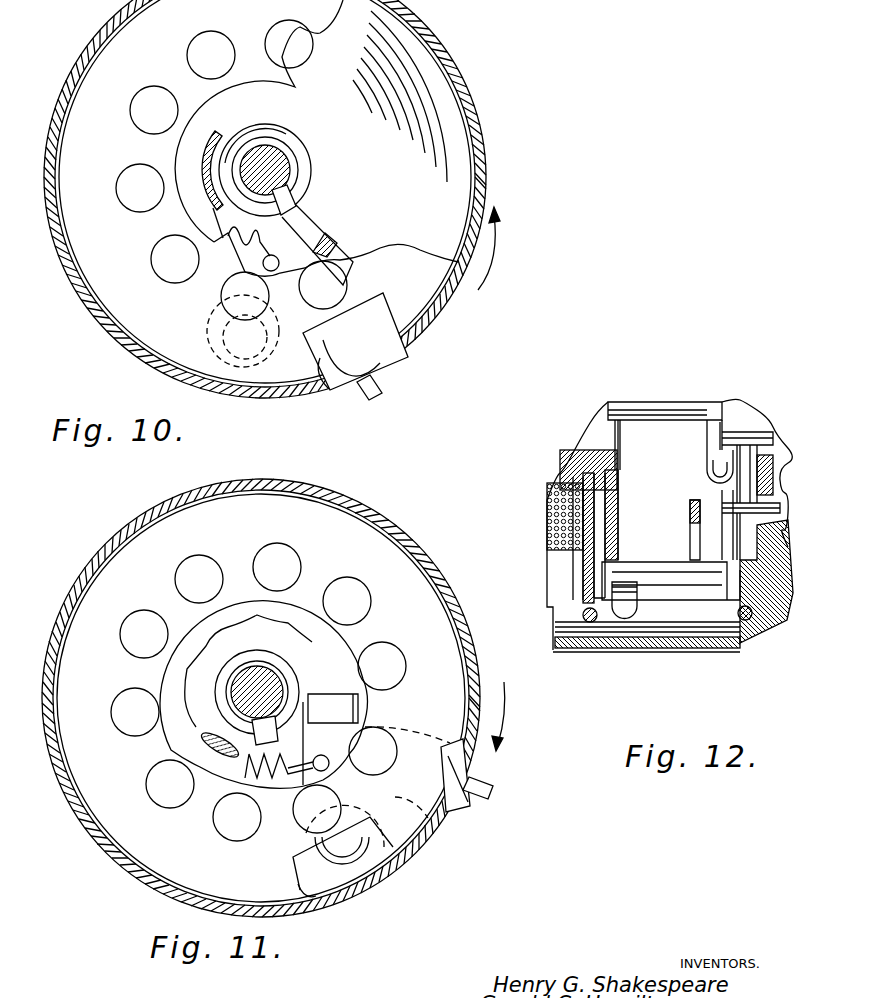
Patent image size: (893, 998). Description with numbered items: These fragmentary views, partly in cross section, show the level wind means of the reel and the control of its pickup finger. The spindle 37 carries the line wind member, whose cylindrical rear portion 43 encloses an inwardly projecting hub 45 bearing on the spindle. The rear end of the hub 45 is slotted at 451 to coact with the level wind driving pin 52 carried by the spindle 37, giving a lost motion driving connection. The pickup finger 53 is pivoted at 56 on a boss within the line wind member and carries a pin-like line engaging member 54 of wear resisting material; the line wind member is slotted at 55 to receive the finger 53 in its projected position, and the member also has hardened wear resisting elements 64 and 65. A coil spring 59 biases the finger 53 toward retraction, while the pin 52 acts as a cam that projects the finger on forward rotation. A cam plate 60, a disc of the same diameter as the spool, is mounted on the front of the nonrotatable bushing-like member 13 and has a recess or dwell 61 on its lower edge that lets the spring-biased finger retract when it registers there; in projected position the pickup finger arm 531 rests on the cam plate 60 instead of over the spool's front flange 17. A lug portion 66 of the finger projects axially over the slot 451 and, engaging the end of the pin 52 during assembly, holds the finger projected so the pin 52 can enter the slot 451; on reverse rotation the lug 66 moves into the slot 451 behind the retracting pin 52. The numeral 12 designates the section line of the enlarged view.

In FIG. 10, the flywheel 12 is at (320, 182).
In FIG. 12, the flywheel 12 is at (560, 468).
In FIG. 10, the bushing-like member 13 is at (218, 106).
In FIG. 11, the bushing-like member 13 is at (187, 742).
In FIG. 12, the bushing-like member 13 is at (600, 450).
In FIG. 12, the front flange 17 is at (580, 585).
In FIG. 10, the spindle 37 is at (277, 160).
In FIG. 11, the spindle 37 is at (232, 690).
In FIG. 12, the spindle 37 is at (655, 400).
In FIG. 11, the cylindrical rear portion 43 is at (403, 543).
In FIG. 12, the cylindrical rear portion 43 is at (707, 634).
In FIG. 10, the hub 45 is at (232, 159).
In FIG. 11, the hub 45 is at (268, 664).
In FIG. 12, the hub 45 is at (737, 425).
In FIG. 10, the slot 451 is at (247, 207).
In FIG. 11, the slot 451 is at (302, 698).
In FIG. 10, the level wind driving pin 52 is at (285, 198).
In FIG. 11, the level wind driving pin 52 is at (280, 734).
In FIG. 10, the pickup finger 53 is at (300, 390).
In FIG. 11, the pickup finger 53 is at (437, 835).
In FIG. 12, the pickup finger 53 is at (728, 517).
In FIG. 10, the pickup finger arm 531 is at (372, 362).
In FIG. 11, the pickup finger arm 531 is at (468, 770).
In FIG. 12, the pickup finger arm 531 is at (673, 600).
In FIG. 10, the line engaging member 54 is at (378, 394).
In FIG. 11, the line engaging member 54 is at (478, 803).
In FIG. 12, the line engaging member 54 is at (623, 618).
In FIG. 10, the slot 55 is at (333, 390).
In FIG. 11, the slot 55 is at (465, 805).
In FIG. 12, the slot 55 is at (727, 618).
In FIG. 10, the pivot 56 is at (172, 370).
In FIG. 11, the pivot 56 is at (352, 843).
In FIG. 12, the pivot 56 is at (697, 538).
In FIG. 10, the coil spring 59 is at (232, 255).
In FIG. 11, the coil spring 59 is at (250, 772).
In FIG. 10, the cam plate 60 is at (120, 283).
In FIG. 11, the cam plate 60 is at (405, 593).
In FIG. 12, the cam plate 60 is at (620, 487).
In FIG. 11, the recess or dwell 61 is at (310, 900).
In FIG. 12, the hardened element 64 is at (755, 625).
In FIG. 12, the hardened element 65 is at (589, 623).
In FIG. 10, the lug portion 66 is at (307, 223).
In FIG. 11, the lug portion 66 is at (340, 710).
In FIG. 12, the lug portion 66 is at (710, 448).